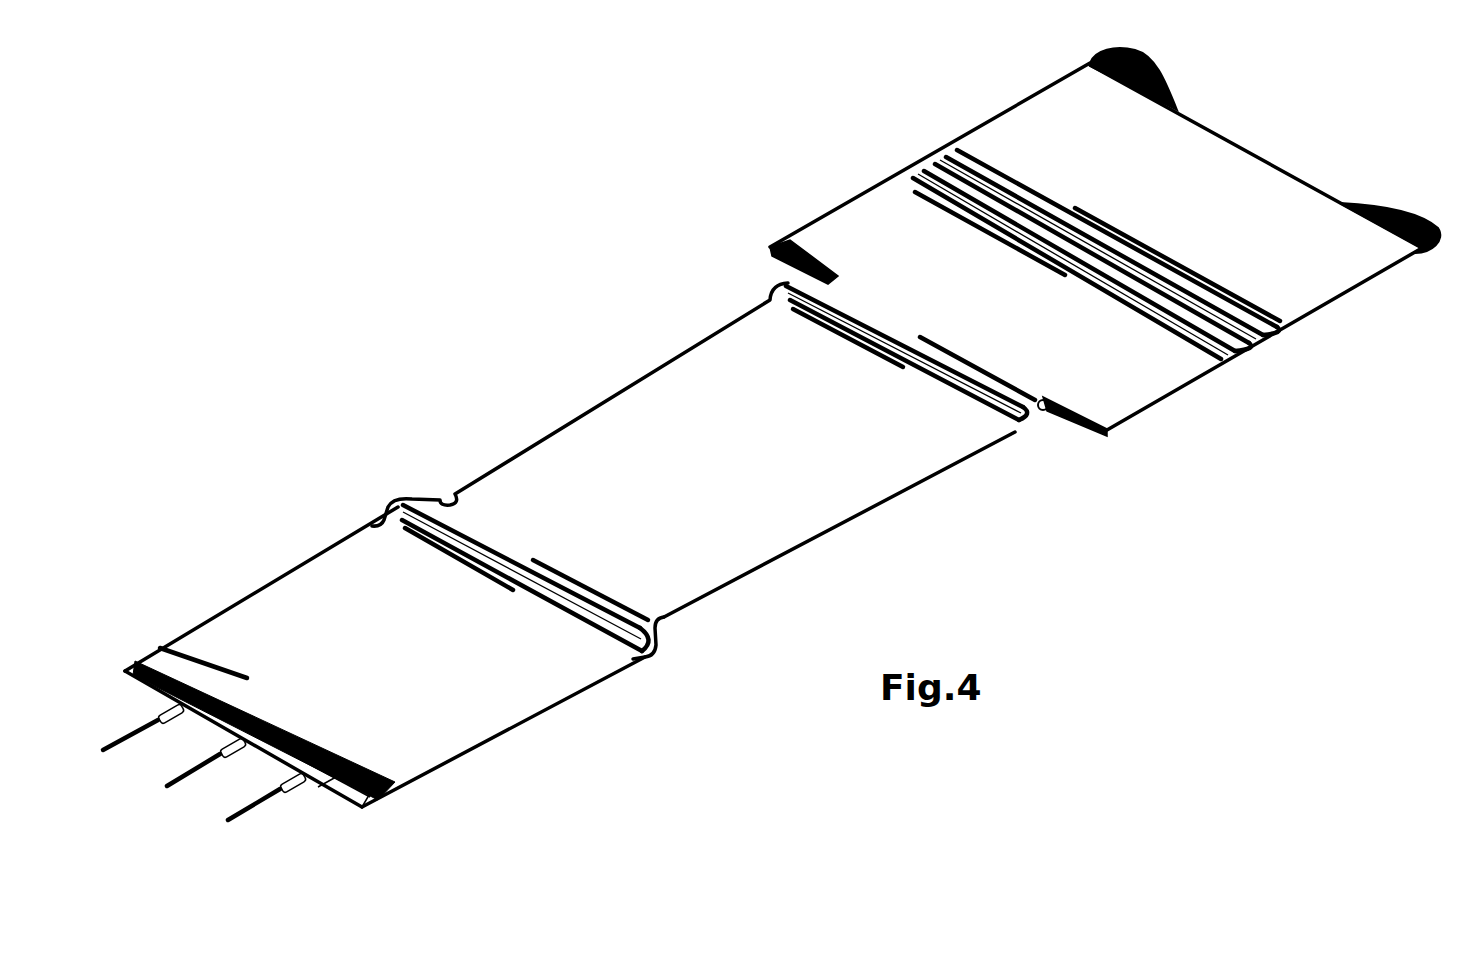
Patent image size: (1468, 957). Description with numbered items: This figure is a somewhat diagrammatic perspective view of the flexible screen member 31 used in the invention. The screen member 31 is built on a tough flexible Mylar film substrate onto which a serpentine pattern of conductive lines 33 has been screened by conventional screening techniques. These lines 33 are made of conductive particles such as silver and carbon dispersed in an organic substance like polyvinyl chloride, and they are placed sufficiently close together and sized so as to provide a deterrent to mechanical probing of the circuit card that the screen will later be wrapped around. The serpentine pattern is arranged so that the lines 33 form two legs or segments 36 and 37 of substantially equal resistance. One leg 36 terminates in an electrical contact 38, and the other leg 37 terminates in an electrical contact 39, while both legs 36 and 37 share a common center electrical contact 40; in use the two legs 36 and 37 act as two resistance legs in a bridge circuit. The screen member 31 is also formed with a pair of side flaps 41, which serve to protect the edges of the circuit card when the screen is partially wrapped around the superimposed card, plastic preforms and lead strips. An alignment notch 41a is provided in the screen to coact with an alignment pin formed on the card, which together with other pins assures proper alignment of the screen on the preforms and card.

The screen member 31 is at (910, 510).
The conductive lines 33 is at (593, 578).
The leg 36 is at (333, 790).
The leg 37 is at (157, 693).
The electrical contact 38 is at (240, 817).
The electrical contact 39 is at (128, 740).
The common center electrical contact 40 is at (185, 780).
The side flaps 41 is at (1183, 392).
The alignment notch 41a is at (690, 633).